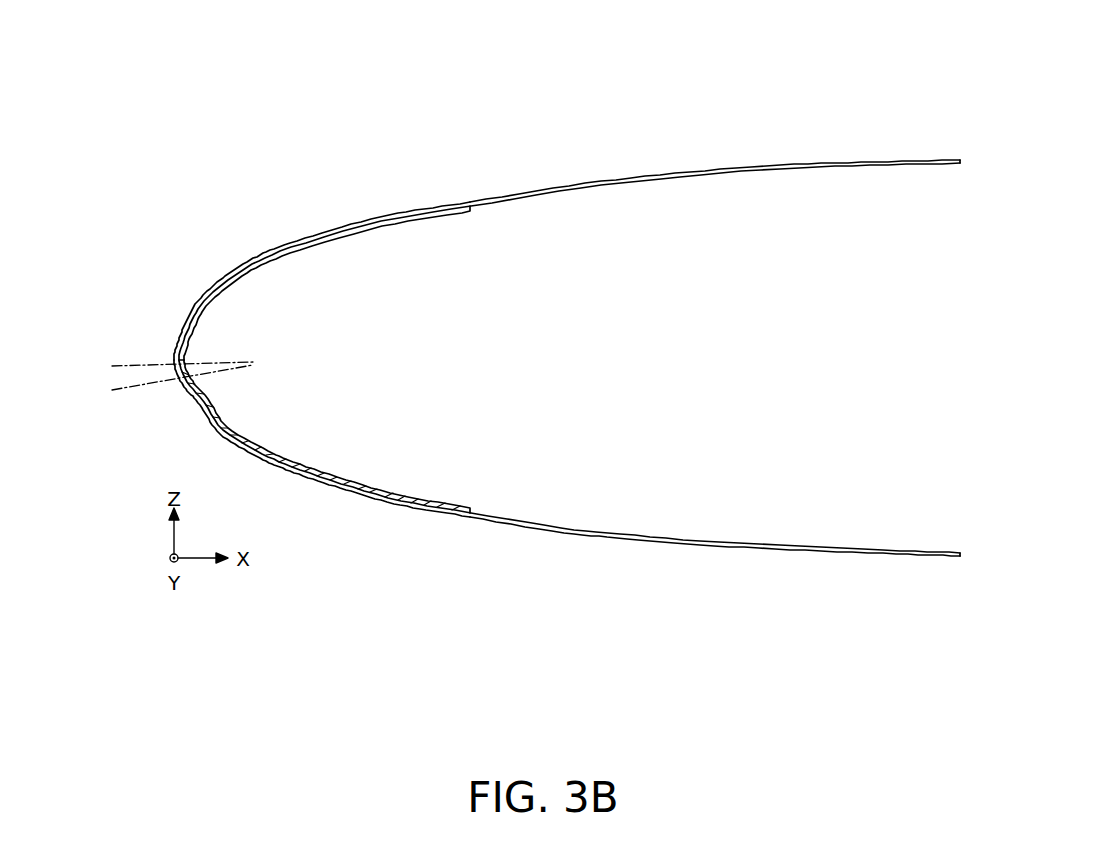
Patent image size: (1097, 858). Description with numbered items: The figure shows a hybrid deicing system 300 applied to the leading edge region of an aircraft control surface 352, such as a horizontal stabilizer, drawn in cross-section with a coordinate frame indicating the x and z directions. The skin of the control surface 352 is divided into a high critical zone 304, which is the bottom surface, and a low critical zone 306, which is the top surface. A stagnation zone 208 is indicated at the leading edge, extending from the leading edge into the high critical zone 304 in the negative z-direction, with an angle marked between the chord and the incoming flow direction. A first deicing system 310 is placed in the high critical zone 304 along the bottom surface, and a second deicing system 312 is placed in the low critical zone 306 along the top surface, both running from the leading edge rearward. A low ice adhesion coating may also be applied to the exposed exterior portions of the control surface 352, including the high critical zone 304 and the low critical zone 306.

The hybrid deicing system 300 is at (377, 140).
The control surface 352 is at (848, 163).
The low critical zone 306 is at (194, 303).
The high critical zone 304 is at (240, 448).
The second deicing system 312 is at (257, 270).
The first deicing system 310 is at (288, 460).
The stagnation zone 208 is at (157, 352).